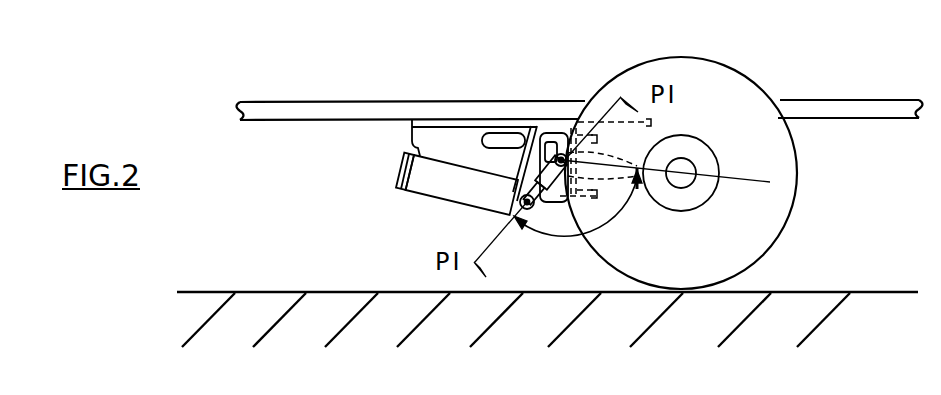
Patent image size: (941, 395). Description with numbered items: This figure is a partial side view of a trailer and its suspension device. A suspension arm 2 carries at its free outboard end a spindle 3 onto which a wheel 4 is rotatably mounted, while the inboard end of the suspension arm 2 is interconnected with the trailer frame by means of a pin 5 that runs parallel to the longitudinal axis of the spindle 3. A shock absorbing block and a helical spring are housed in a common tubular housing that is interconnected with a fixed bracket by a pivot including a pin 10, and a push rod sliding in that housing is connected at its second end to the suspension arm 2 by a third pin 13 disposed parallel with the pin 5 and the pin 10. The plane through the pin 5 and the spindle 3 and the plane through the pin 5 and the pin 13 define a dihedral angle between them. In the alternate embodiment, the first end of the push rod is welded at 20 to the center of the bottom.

The suspension arm 2 is at (639, 190).
The spindle 3 is at (695, 168).
The wheel 4 is at (728, 66).
The pin 5 is at (549, 134).
The pin 10 is at (427, 175).
The third pin 13 is at (514, 199).
The weld 20 is at (553, 240).